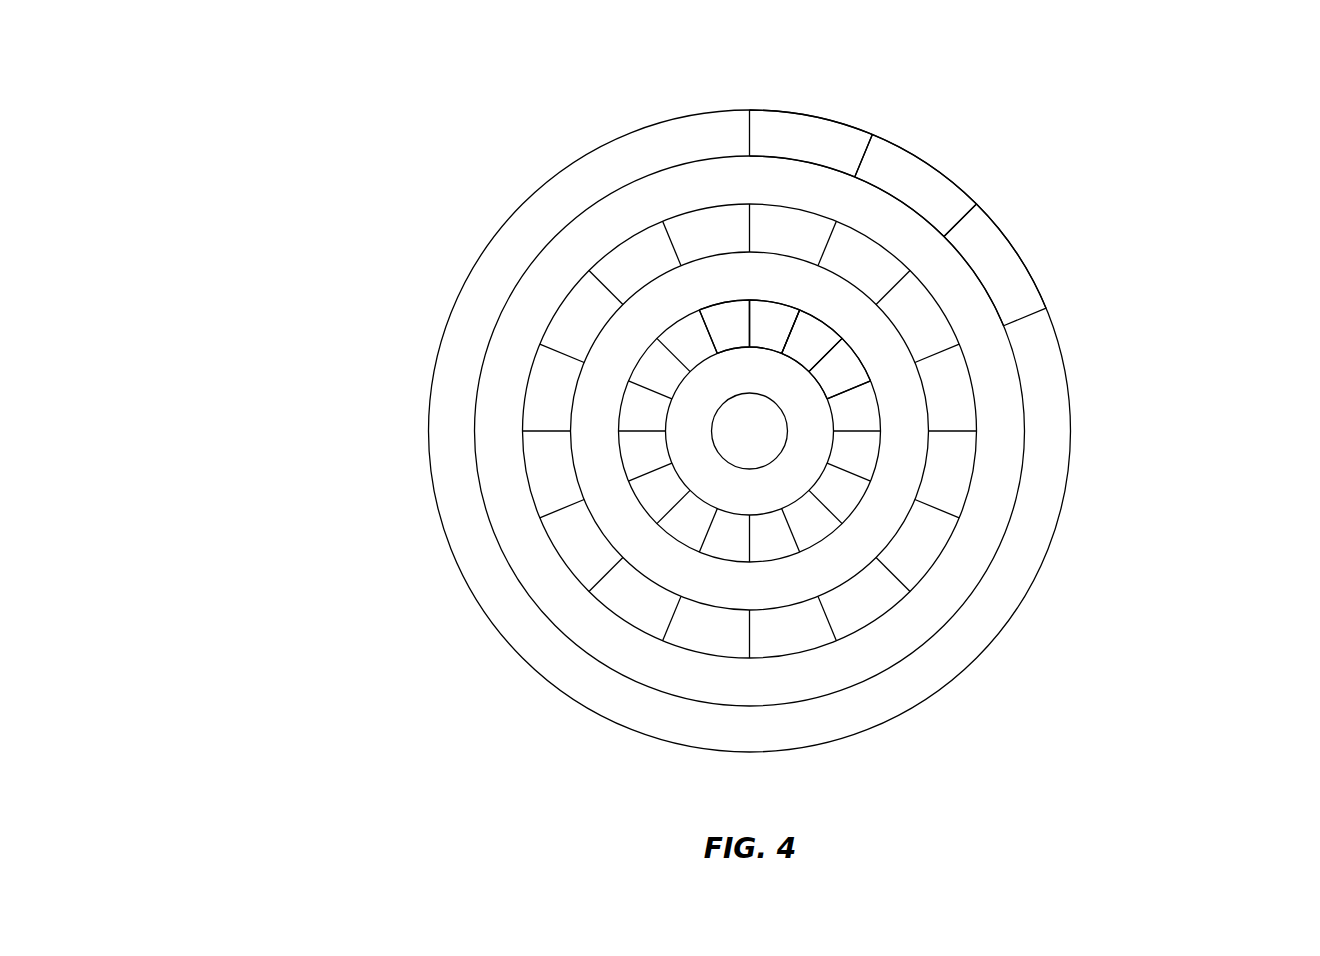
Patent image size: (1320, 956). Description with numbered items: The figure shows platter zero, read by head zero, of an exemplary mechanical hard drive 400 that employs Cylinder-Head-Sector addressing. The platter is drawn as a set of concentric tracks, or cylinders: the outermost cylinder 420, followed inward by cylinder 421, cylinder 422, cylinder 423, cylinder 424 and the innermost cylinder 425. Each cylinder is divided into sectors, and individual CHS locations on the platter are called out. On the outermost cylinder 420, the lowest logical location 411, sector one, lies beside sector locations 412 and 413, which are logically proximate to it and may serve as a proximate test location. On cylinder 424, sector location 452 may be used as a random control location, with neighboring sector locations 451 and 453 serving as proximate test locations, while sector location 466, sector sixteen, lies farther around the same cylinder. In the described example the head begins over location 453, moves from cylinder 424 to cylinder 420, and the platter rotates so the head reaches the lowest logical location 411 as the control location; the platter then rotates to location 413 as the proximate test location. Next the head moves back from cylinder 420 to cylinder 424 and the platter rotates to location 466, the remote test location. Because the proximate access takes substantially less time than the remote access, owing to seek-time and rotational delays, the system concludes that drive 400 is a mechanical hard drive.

The mechanical hard drive 400 is at (307, 152).
The lowest logical location 411 is at (788, 129).
The CHS address (0, 0, 2) 412 is at (889, 162).
The CHS address (0, 0, 3) 413 is at (1003, 262).
The cylinder 0 420 is at (735, 739).
The cylinder 1 421 is at (735, 691).
The cylinder 2 422 is at (735, 642).
The cylinder 3 423 is at (735, 593).
The cylinder 4 424 is at (735, 543).
The cylinder 5 425 is at (735, 494).
The CHS address (4, 0, 1) 451 is at (764, 316).
The CHS address (4, 0, 2) 452 is at (815, 323).
The CHS address (4, 0, 3) 453 is at (857, 363).
The CHS address (4, 0, 16) 466 is at (712, 317).